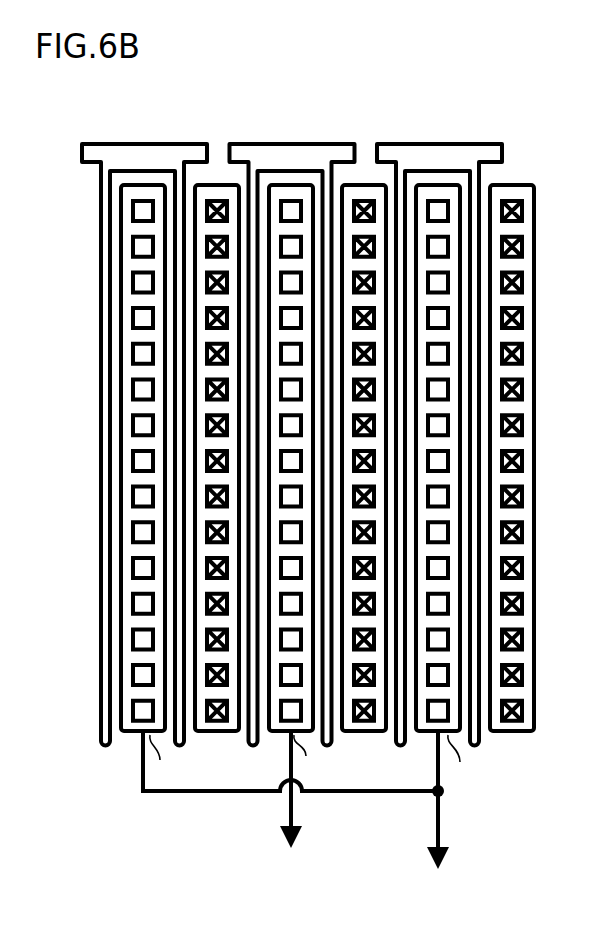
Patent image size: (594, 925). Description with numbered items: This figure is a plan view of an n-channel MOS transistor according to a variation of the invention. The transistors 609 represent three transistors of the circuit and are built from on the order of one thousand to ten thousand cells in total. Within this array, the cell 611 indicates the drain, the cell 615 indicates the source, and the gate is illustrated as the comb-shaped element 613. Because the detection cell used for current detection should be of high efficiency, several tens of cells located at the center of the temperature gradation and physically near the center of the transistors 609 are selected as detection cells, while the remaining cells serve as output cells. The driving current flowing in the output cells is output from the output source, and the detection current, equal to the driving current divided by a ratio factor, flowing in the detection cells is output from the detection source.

The transistors 609 is at (121, 755).
The drain cell 611 is at (513, 197).
The gate 613 is at (118, 143).
The source cell 615 is at (292, 200).